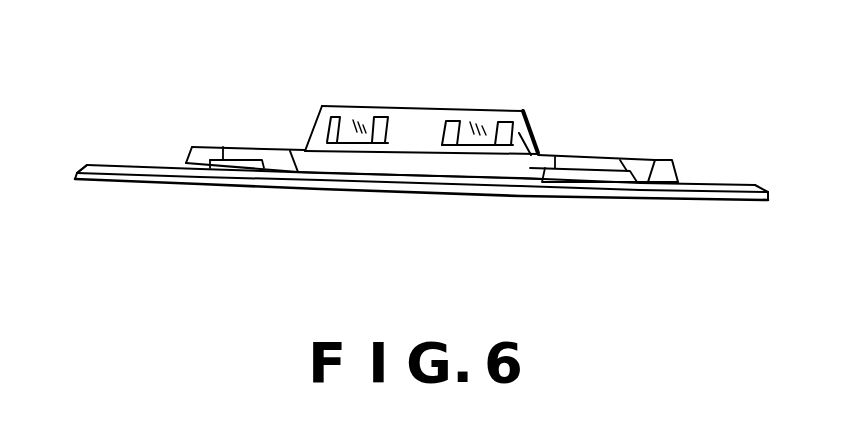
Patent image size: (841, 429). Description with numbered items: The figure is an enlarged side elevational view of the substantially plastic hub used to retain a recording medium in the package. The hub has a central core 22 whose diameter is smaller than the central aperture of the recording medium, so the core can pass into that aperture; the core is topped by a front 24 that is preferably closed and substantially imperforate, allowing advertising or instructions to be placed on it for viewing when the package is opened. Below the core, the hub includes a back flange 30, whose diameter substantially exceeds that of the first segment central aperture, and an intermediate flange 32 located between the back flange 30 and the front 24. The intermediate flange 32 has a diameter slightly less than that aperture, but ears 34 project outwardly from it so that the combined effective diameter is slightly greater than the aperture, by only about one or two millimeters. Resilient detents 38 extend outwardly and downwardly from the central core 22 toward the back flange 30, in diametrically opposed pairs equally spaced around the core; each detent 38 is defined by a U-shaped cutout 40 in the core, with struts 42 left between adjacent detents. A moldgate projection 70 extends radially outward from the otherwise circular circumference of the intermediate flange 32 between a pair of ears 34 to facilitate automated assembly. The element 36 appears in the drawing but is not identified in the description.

The central core 22 is at (317, 118).
The front 24 is at (410, 109).
The back flange 30 is at (76, 178).
The intermediate flange 32 is at (190, 150).
The ears 34 is at (258, 154).
The mating connector 36 is at (393, 0).
The resilient detents 38 is at (486, 136).
The U-shaped cutout 40 is at (330, 141).
The struts 42 is at (422, 137).
The moldgate projection 70 is at (677, 171).